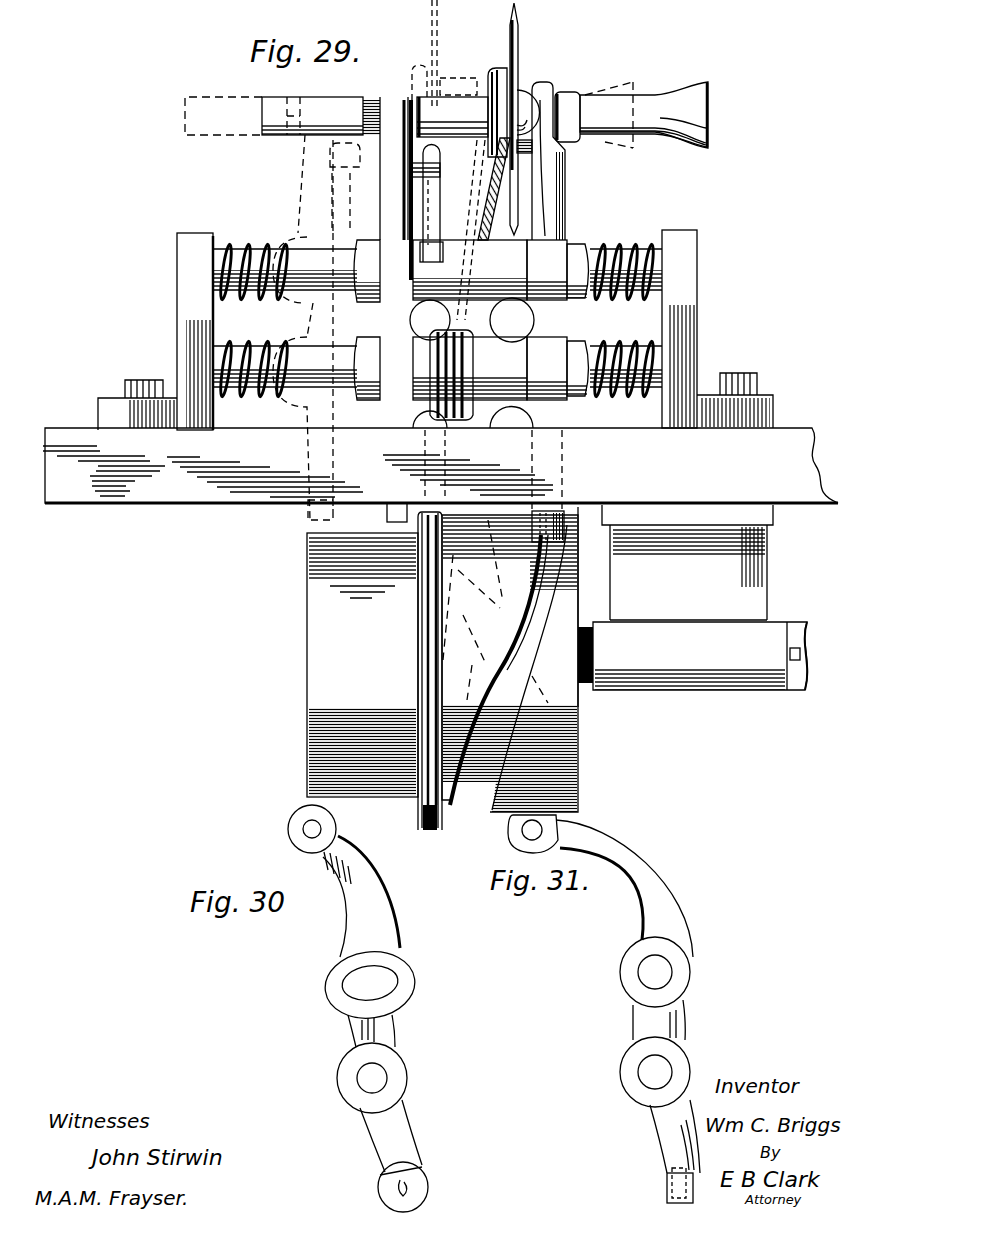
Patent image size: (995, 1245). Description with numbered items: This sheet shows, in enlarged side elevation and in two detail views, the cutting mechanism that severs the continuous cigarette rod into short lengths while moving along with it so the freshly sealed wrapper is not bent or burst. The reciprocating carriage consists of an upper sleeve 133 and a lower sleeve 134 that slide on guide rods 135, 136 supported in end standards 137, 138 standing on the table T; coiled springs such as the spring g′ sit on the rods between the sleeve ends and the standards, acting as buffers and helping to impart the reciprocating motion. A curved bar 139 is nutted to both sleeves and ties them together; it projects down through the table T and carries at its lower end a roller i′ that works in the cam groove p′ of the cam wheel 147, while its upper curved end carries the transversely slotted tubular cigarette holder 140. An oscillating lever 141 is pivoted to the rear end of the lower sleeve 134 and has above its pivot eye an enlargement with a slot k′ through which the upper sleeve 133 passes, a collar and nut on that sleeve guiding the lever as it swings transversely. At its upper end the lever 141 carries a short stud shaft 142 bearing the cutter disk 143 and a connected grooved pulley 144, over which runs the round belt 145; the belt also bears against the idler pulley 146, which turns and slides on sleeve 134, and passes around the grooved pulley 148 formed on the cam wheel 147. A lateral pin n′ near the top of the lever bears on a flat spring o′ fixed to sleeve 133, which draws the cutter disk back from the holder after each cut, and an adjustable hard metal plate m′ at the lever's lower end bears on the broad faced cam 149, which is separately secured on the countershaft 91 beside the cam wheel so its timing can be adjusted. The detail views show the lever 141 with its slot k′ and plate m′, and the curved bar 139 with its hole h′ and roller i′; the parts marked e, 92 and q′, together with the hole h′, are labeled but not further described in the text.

In FIG. 29, the table T is at (440, 465).
In FIG. 29, the end standard 138 is at (155, 331).
In FIG. 29, the end standard 137 is at (717, 329).
In FIG. 29, the upper sleeve 133 is at (437, 270).
In FIG. 29, the lower sleeve 134 is at (437, 368).
In FIG. 29, the guide rod 135 is at (318, 258).
In FIG. 29, the guide rod 136 is at (323, 350).
In FIG. 29, the coiled spring g′ is at (437, 255).
In FIG. 29, the slot k′ is at (418, 341).
In FIG. 30, the slot k′ is at (370, 985).
In FIG. 29, the roller i′ is at (583, 529).
In FIG. 30, the roller i′ is at (383, 1077).
In FIG. 31, the roller i′ is at (680, 1187).
In FIG. 29, the grooved pulley 146 is at (474, 411).
In FIG. 29, the oscillating lever 141 is at (388, 182).
In FIG. 30, the oscillating lever 141 is at (360, 988).
In FIG. 29, the tubular cigarette holder 140 is at (331, 113).
In FIG. 29, the stud shaft 142 is at (450, 101).
In FIG. 29, the cutter disk 143 is at (530, 119).
In FIG. 29, the grooved pulley 144 is at (489, 82).
In FIG. 29, the curved bar 139 is at (557, 206).
In FIG. 31, the curved bar 139 is at (614, 994).
In FIG. 29, the lateral pin n′ is at (434, 204).
In FIG. 29, the flat spring o′ is at (435, 217).
In FIG. 29, the screw e is at (431, 252).
In FIG. 29, the round belt 145 is at (488, 198).
In FIG. 29, the adjustable plate m′ is at (379, 515).
In FIG. 30, the adjustable plate m′ is at (427, 1182).
In FIG. 29, the broad faced cam 149 is at (362, 665).
In FIG. 29, the grooved pulley 148 is at (417, 810).
In FIG. 29, the cam wheel 147 is at (598, 753).
In FIG. 29, the cam groove p′ is at (508, 672).
In FIG. 29, the bracket 92 is at (675, 606).
In FIG. 29, the slide bar q′ is at (692, 656).
In FIG. 29, the countershaft 91 is at (820, 646).
In FIG. 31, the hole h′ is at (643, 973).